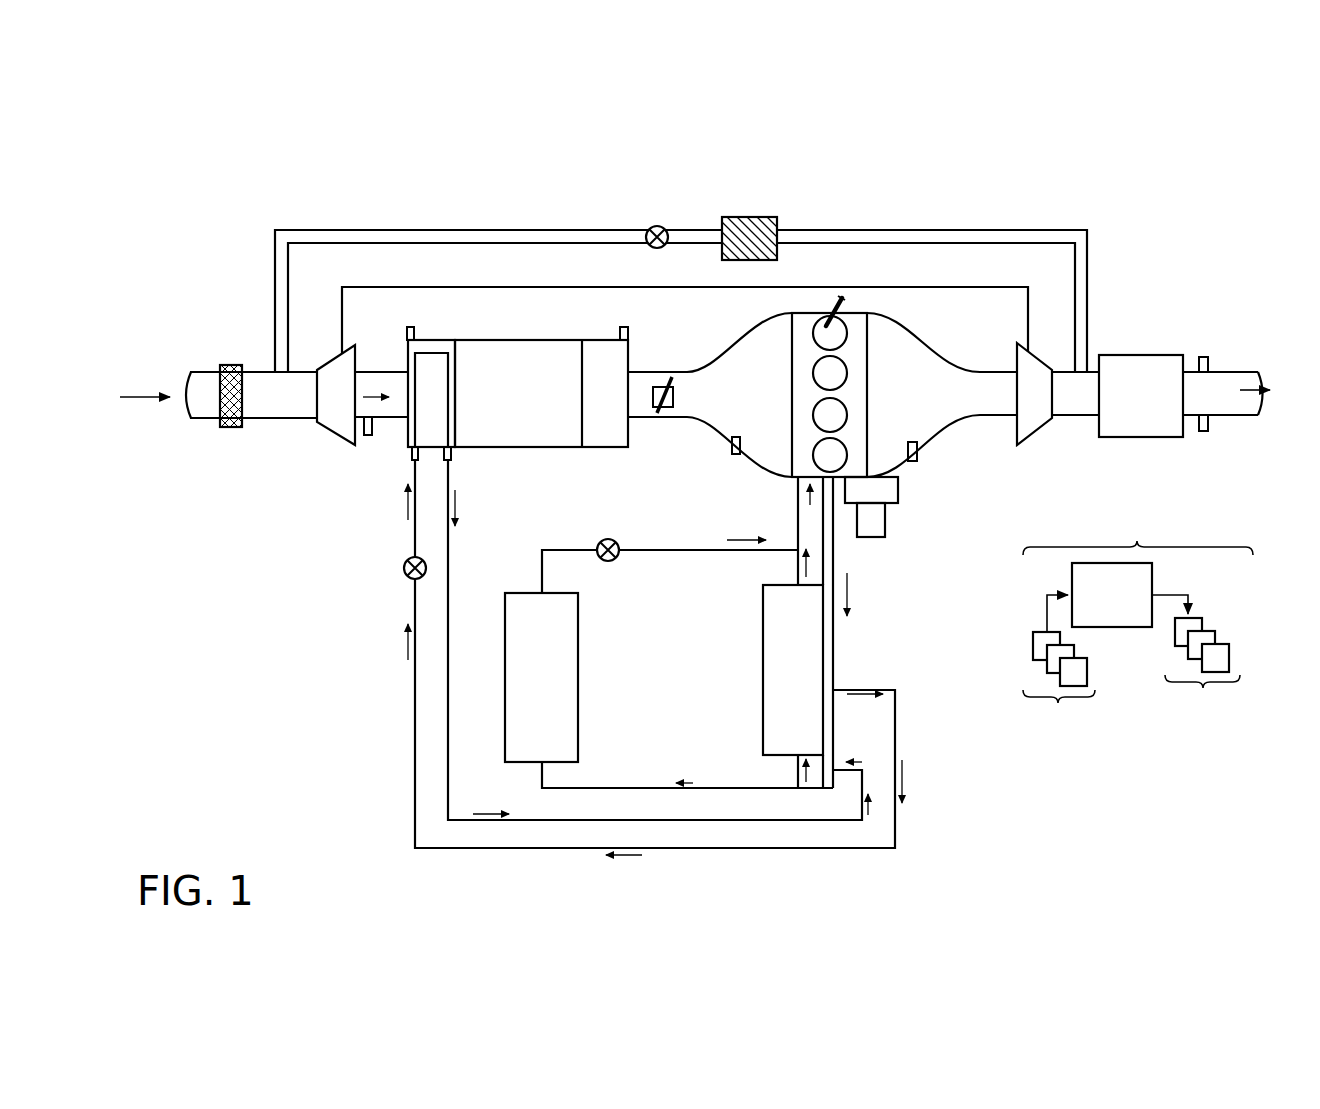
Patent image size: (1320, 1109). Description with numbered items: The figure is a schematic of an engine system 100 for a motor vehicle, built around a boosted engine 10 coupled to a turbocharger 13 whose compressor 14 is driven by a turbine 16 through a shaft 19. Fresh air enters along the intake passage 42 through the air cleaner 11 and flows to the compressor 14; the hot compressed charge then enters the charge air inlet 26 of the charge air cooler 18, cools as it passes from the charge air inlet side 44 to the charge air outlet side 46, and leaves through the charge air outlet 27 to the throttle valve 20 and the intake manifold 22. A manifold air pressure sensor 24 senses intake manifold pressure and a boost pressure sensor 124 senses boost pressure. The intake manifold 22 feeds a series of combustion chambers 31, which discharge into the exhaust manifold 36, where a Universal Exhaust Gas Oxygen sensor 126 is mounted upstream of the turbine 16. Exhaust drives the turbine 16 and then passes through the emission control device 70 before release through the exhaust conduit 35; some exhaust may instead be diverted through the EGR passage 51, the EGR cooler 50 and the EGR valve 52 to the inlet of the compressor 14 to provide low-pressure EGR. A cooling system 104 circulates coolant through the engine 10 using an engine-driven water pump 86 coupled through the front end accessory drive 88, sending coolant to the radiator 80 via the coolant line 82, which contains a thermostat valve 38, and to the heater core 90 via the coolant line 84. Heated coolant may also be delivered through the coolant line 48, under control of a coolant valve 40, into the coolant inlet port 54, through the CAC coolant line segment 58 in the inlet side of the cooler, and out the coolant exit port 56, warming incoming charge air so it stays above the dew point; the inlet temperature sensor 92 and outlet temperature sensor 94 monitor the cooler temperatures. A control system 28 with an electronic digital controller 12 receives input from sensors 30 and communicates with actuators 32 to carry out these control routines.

The engine system 100 is at (1174, 184).
The engine 10 is at (867, 380).
The air cleaner 11 is at (231, 365).
The electronic digital controller 12 is at (1123, 606).
The turbocharger 13 is at (596, 279).
The compressor 14 is at (346, 406).
The turbine 16 is at (1046, 406).
The charge air cooler 18 is at (528, 404).
The shaft 19 is at (951, 289).
The throttle valve 20 is at (676, 400).
The intake manifold 22 is at (766, 408).
The manifold air pressure sensor 24 is at (732, 441).
The charge air inlet 26 is at (406, 394).
The charge air outlet 27 is at (630, 393).
The control system 28 is at (1137, 545).
The sensors 30 is at (1062, 673).
The combustion chambers 31 is at (848, 328).
The actuators 32 is at (1203, 663).
The exhaust conduit 35 is at (1245, 372).
The exhaust manifold 36 is at (931, 408).
The thermostat valve 38 is at (612, 562).
The coolant valve 40 is at (403, 568).
The intake passage 42 is at (211, 420).
The charge air inlet side 44 is at (448, 338).
The charge air outlet side 46 is at (593, 340).
The coolant line 48 is at (412, 747).
The EGR cooler 50 is at (760, 218).
The EGR passage 51 is at (860, 230).
The EGR valve 52 is at (664, 228).
The coolant inlet port 54 is at (411, 456).
The coolant exit port 56 is at (452, 457).
The CAC coolant line segment 58 is at (450, 427).
The emission control device 70 is at (1129, 355).
The radiator 80 is at (541, 677).
The coolant line 82 is at (708, 549).
The coolant line 84 is at (798, 580).
The engine-driven water pump 86 is at (885, 527).
The front end accessory drive 88 is at (898, 487).
The heater core 90 is at (793, 670).
The inlet temperature sensor 92 is at (407, 329).
The outlet temperature sensor 94 is at (630, 336).
The cooling system 104 is at (912, 659).
The boost pressure sensor 124 is at (373, 435).
The Universal Exhaust Gas Oxygen sensor 126 is at (917, 452).